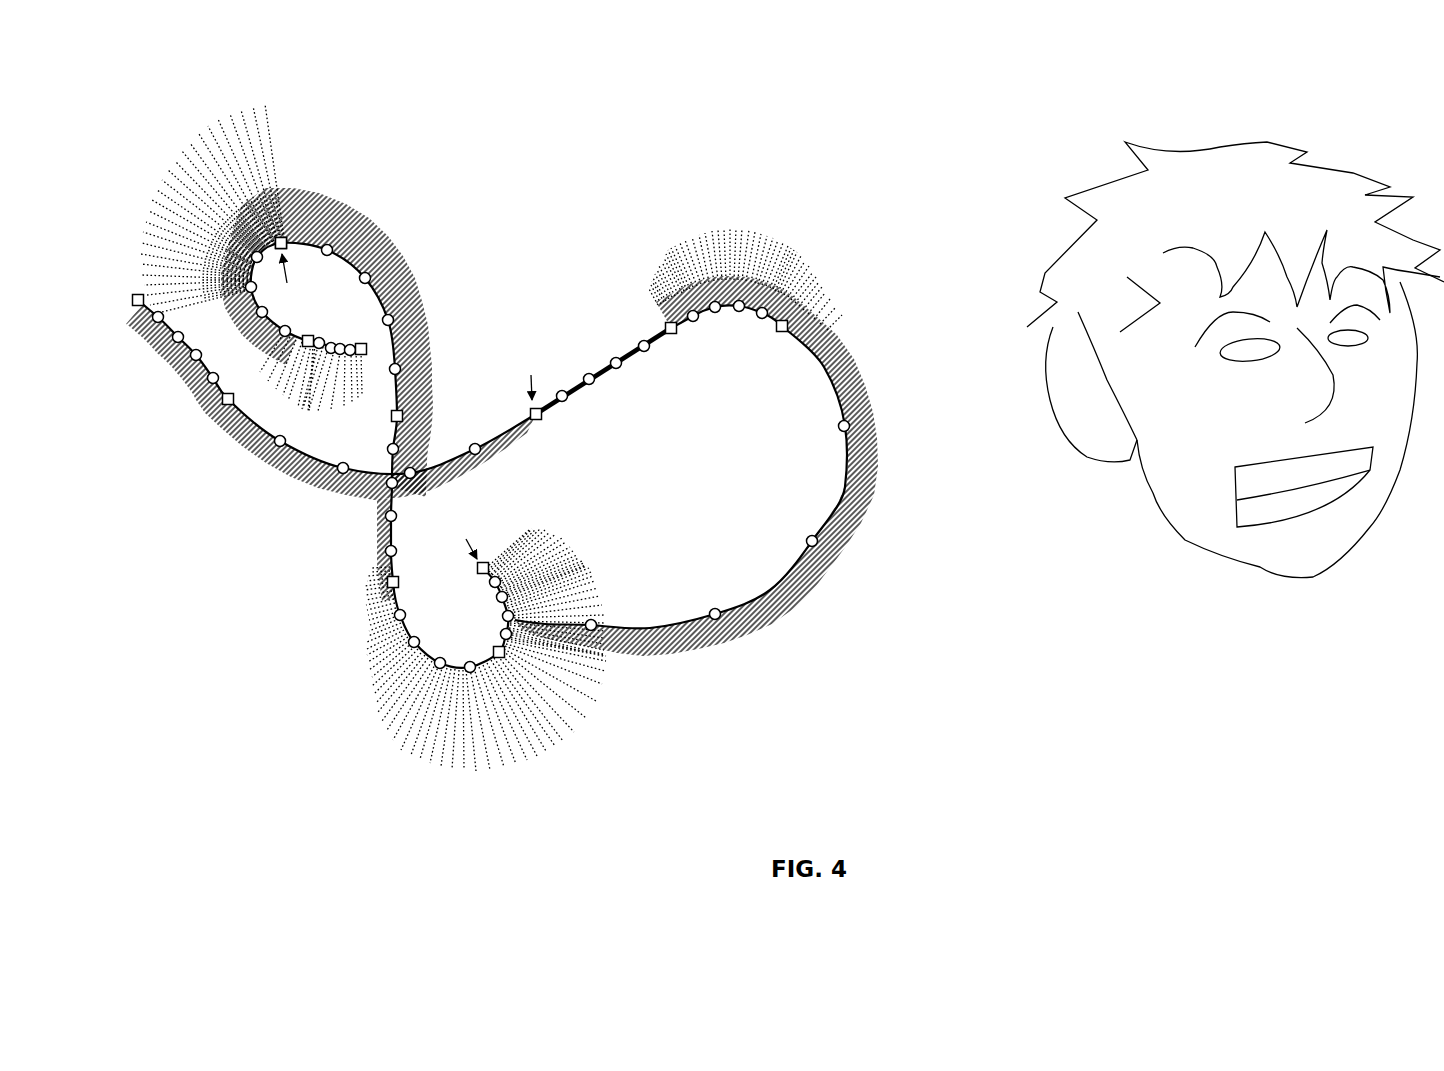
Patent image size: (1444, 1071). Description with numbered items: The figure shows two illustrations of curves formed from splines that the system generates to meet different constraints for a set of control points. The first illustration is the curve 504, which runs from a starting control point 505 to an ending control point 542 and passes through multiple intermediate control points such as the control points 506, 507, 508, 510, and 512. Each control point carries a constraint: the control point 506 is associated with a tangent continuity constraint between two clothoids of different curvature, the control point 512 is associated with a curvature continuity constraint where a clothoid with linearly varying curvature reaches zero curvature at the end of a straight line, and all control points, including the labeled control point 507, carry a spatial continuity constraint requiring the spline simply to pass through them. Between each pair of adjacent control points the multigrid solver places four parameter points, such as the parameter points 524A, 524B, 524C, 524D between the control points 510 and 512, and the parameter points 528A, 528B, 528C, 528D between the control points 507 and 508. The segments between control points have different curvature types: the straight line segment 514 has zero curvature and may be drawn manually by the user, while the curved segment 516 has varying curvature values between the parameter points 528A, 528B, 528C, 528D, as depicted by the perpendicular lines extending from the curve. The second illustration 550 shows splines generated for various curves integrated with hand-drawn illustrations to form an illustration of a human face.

The curve 504 is at (289, 660).
The starting control point 505 is at (362, 356).
The control point 506 is at (285, 256).
The control point 507 is at (477, 568).
The control point 508 is at (783, 333).
The control point 510 is at (678, 334).
The control point 512 is at (530, 412).
The straight line segment 514 is at (577, 392).
The curved segment 516 is at (807, 558).
The parameter point 524A is at (561, 390).
The parameter point 524B is at (589, 373).
The parameter point 524C is at (614, 357).
The parameter point 524D is at (643, 340).
The parameter point 528A is at (594, 621).
The parameter point 528B is at (732, 597).
The parameter point 528C is at (806, 538).
The parameter point 528D is at (838, 428).
The ending control point 542 is at (142, 307).
The illustration 550 is at (1156, 607).